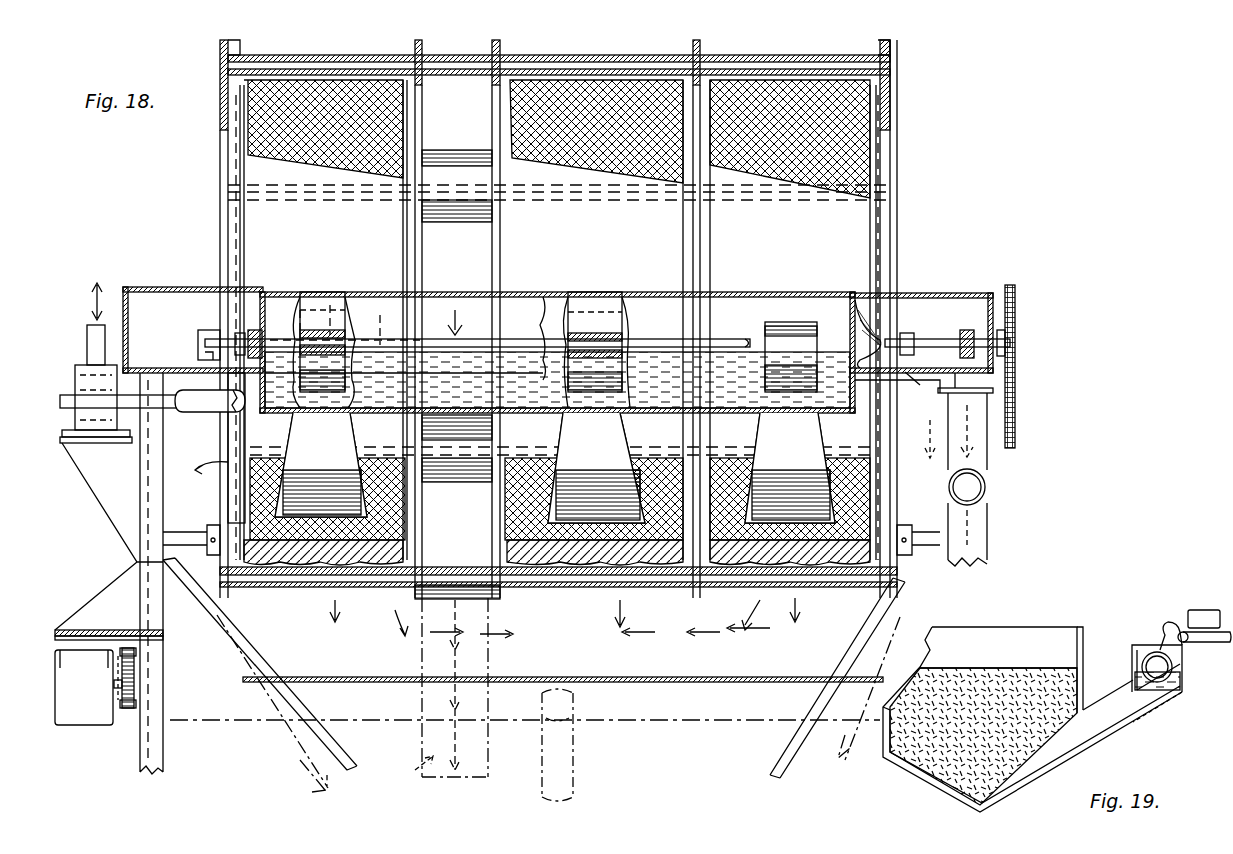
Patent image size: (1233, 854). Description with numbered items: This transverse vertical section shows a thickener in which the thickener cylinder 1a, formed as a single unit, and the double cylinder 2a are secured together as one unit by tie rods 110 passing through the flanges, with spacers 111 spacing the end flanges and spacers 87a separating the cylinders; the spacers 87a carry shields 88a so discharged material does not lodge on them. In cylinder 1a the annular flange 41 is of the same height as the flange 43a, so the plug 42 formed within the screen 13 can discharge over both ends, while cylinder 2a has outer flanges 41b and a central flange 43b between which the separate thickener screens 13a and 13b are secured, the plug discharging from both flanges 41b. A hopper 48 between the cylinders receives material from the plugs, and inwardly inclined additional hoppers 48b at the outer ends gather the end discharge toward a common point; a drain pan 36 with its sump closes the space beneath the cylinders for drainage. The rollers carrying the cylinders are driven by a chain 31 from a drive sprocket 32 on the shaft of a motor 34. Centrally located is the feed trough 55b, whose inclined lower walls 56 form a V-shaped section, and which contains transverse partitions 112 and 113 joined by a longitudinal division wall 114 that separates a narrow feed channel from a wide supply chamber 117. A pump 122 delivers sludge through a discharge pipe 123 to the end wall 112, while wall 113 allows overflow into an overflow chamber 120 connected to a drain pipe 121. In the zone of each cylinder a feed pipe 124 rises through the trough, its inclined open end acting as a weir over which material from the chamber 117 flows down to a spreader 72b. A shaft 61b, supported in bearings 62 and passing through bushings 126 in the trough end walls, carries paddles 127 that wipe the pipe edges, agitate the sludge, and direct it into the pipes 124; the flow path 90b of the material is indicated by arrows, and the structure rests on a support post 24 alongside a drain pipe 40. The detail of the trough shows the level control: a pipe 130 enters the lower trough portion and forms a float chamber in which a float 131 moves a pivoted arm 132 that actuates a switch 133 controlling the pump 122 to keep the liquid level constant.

In FIG. 18, the thickener cylinder 1a is at (218, 52).
In FIG. 18, the cylinder 2a is at (900, 55).
In FIG. 18, the screen 13 is at (340, 95).
In FIG. 18, the thickener screen 13a is at (605, 110).
In FIG. 18, the thickener screen 13b is at (815, 105).
In FIG. 18, the support post 24 is at (148, 772).
In FIG. 18, the chain 31 is at (125, 712).
In FIG. 18, the drive sprocket 32 is at (135, 688).
In FIG. 18, the motor 34 is at (80, 722).
In FIG. 18, the drain pan 36 is at (695, 682).
In FIG. 18, the drain pipe 40 is at (575, 765).
In FIG. 18, the annular flange 41 is at (222, 125).
In FIG. 18, the outer flange 41b is at (895, 100).
In FIG. 18, the plug 42 is at (320, 560).
In FIG. 18, the annular flange 43a is at (422, 118).
In FIG. 18, the central flange 43b is at (700, 50).
In FIG. 18, the hopper 48 is at (415, 770).
In FIG. 18, the additional hopper 48b is at (290, 777).
In FIG. 18, the feed trough 55b is at (960, 280).
In FIG. 19, the feed trough 55b is at (1120, 744).
In FIG. 19, the inclined lower wall 56 is at (915, 775).
In FIG. 18, the shaft 61b is at (1012, 345).
In FIG. 18, the bearing 62 is at (185, 352).
In FIG. 18, the spreader 72b is at (820, 470).
In FIG. 18, the spacer 87a is at (440, 55).
In FIG. 18, the shield 88a is at (472, 82).
In FIG. 18, the flow path 90b is at (440, 622).
In FIG. 18, the tie rod 110 is at (868, 55).
In FIG. 18, the spacer 111 is at (278, 55).
In FIG. 18, the transverse partition 112 is at (243, 303).
In FIG. 18, the transverse partition 113 is at (855, 320).
In FIG. 18, the longitudinal division wall 114 is at (535, 297).
In FIG. 18, the supply chamber 117 is at (728, 300).
In FIG. 18, the overflow chamber 120 is at (1000, 278).
In FIG. 18, the drain pipe 121 is at (985, 465).
In FIG. 18, the pump 122 is at (98, 410).
In FIG. 18, the discharge pipe 123 is at (175, 418).
In FIG. 18, the feed pipe 124 is at (290, 292).
In FIG. 18, the bushing 126 is at (230, 330).
In FIG. 18, the paddle 127 is at (318, 292).
In FIG. 19, the pipe 130 is at (1150, 705).
In FIG. 19, the float 131 is at (1172, 662).
In FIG. 19, the pivoted arm 132 is at (1165, 625).
In FIG. 19, the switch 133 is at (1205, 610).